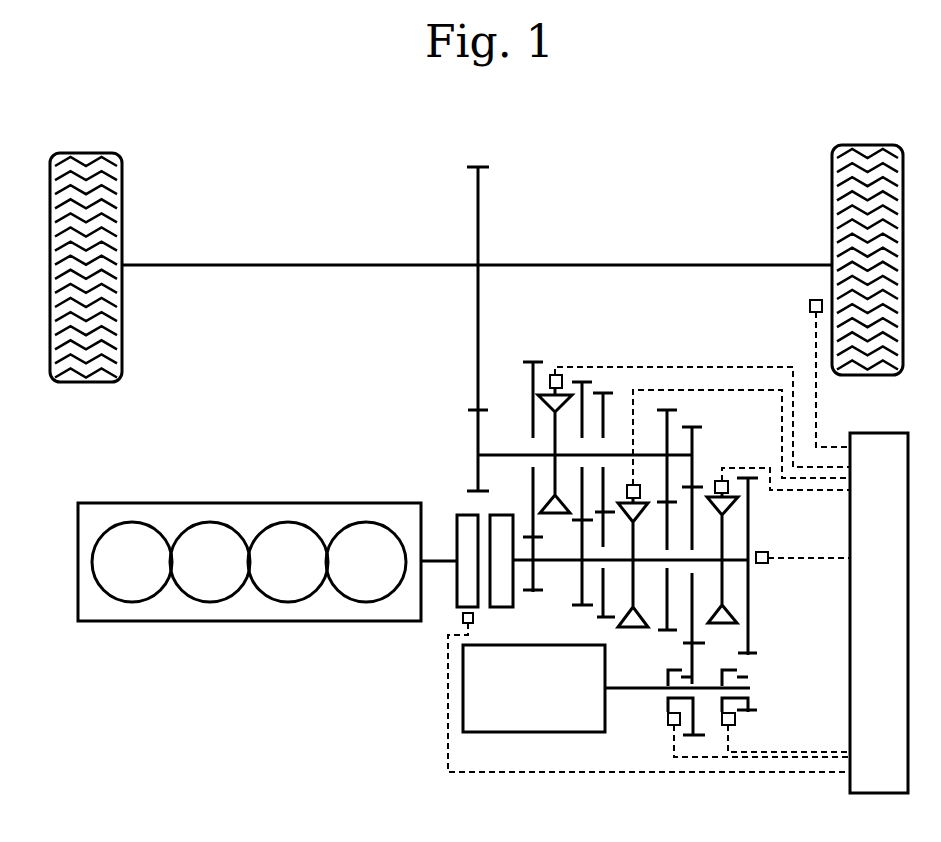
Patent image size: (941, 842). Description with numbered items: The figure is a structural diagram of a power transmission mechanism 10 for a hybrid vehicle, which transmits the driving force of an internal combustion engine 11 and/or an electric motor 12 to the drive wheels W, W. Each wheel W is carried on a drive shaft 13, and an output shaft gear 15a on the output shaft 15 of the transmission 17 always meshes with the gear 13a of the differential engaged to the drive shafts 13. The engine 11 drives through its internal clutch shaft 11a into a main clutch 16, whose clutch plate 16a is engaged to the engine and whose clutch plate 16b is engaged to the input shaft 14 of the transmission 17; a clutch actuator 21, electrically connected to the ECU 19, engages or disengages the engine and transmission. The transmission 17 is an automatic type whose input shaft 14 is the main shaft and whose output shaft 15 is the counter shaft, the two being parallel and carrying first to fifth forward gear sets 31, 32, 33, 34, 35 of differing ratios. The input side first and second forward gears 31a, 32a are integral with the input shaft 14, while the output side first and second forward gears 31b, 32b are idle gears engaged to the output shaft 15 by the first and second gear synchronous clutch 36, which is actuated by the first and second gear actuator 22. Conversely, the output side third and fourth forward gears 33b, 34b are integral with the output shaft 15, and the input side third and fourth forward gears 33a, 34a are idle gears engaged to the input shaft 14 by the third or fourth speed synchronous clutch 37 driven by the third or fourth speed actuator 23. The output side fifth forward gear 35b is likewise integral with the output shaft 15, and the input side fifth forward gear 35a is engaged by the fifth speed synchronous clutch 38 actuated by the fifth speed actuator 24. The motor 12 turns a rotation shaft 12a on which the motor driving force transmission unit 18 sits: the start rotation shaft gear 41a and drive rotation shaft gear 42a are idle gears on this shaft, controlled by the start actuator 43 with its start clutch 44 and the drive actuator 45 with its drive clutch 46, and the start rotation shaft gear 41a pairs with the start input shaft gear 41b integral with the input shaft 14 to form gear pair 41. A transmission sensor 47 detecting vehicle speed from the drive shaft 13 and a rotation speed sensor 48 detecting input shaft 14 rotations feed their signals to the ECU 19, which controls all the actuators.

The power transmission mechanism 10 is at (728, 147).
The internal combustion engine 11 is at (98, 502).
The internal clutch shaft 11a is at (438, 563).
The electric motor 12 is at (483, 733).
The rotation shaft 12a is at (608, 692).
The drive shaft 13 is at (321, 265).
The gear of the differential 13a is at (481, 165).
The input shaft 14 is at (748, 566).
The output shaft 15 is at (505, 454).
The output shaft gear 15a is at (475, 432).
The main clutch 16 is at (424, 505).
The clutch plate 16a is at (457, 514).
The clutch plate 16b is at (490, 515).
The transmission 17 is at (751, 407).
The motor driving force transmission unit 18 is at (763, 668).
The ECU 19 is at (877, 433).
The clutch actuator 21 is at (462, 620).
The first and second gear actuator 22 is at (551, 374).
The third or fourth speed actuator 23 is at (637, 484).
The fifth speed actuator 24 is at (725, 480).
The first forward gear set 31 is at (423, 491).
The input side first forward gear 31a is at (532, 593).
The output side first forward gear 31b is at (531, 361).
The second forward gear set 32 is at (481, 506).
The input side second forward gear 32a is at (581, 606).
The output side second forward gear 32b is at (580, 380).
The third forward gear set 33 is at (486, 536).
The input side third forward gear 33a is at (602, 618).
The output side third forward gear 33b is at (601, 391).
The fourth forward gear set 34 is at (620, 546).
The input side fourth forward gear 34a is at (660, 633).
The output side fourth forward gear 34b is at (667, 409).
The fifth forward gear set 35 is at (664, 577).
The input side fifth forward gear 35a is at (688, 645).
The output side fifth forward gear 35b is at (688, 426).
The first and second gear synchronous clutch 36 is at (545, 393).
The third or fourth speed synchronous clutch 37 is at (622, 501).
The fifth speed synchronous clutch 38 is at (717, 480).
The start gear pair 41 is at (790, 612).
The start rotation shaft gear 41a is at (750, 706).
The start input shaft gear 41b is at (750, 528).
The drive rotation shaft gear 42a is at (700, 740).
The start actuator 43 is at (731, 727).
The start clutch 44 is at (722, 713).
The drive actuator 45 is at (672, 727).
The drive clutch 46 is at (667, 698).
The transmission sensor 47 is at (814, 300).
The rotation speed sensor 48 is at (762, 552).
The drive wheel W is at (476, 252).